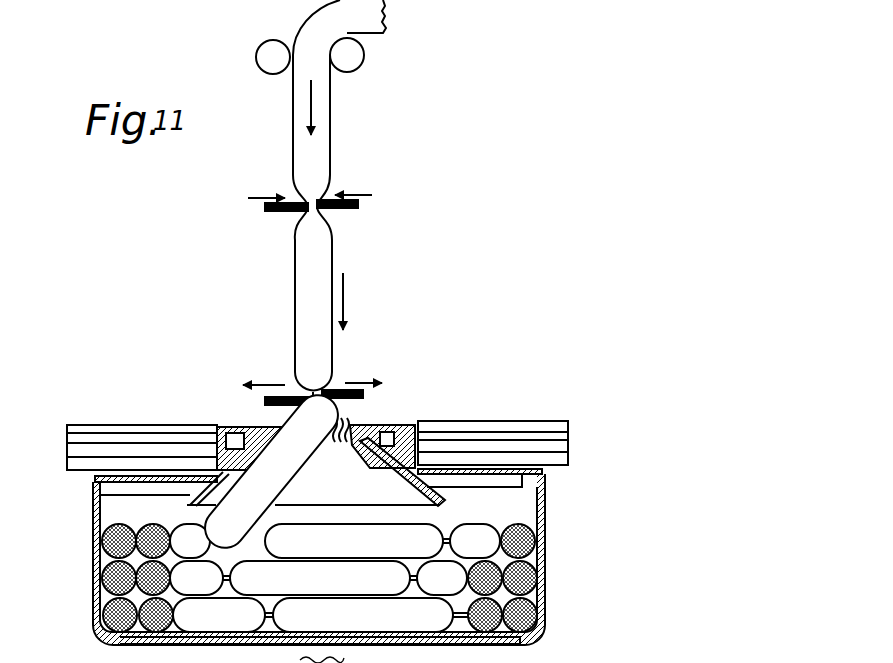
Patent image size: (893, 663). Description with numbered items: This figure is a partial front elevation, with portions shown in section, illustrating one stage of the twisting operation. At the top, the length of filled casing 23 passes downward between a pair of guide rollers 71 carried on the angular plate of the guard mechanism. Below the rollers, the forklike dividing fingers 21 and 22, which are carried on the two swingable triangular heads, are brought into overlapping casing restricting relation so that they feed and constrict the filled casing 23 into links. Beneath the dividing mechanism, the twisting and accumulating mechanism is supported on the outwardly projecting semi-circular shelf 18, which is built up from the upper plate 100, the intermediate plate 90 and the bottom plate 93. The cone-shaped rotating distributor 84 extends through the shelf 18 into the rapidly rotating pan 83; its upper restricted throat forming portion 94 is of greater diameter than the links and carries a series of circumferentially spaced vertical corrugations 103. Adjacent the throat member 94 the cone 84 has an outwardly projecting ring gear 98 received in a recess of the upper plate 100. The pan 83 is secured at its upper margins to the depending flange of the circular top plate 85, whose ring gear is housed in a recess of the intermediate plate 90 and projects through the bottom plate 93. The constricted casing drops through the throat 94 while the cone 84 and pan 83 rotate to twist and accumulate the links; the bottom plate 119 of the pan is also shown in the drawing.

The guide rollers 71 is at (343, 52).
The length of filled casing 23 is at (330, 110).
The dividing finger 22 is at (272, 212).
The dividing finger 21 is at (350, 209).
The upper plate 100 is at (67, 436).
The bottom plate 93 is at (67, 467).
The intermediate plate 90 is at (568, 443).
The shelf 18 is at (553, 421).
The ring gear 98 is at (225, 425).
The corrugations 103 is at (352, 412).
The throat forming portion 94 is at (368, 420).
The distributor cone 84 is at (338, 495).
The top plate 85 is at (497, 475).
The pan 83 is at (545, 553).
The bottom plate 119 is at (483, 636).